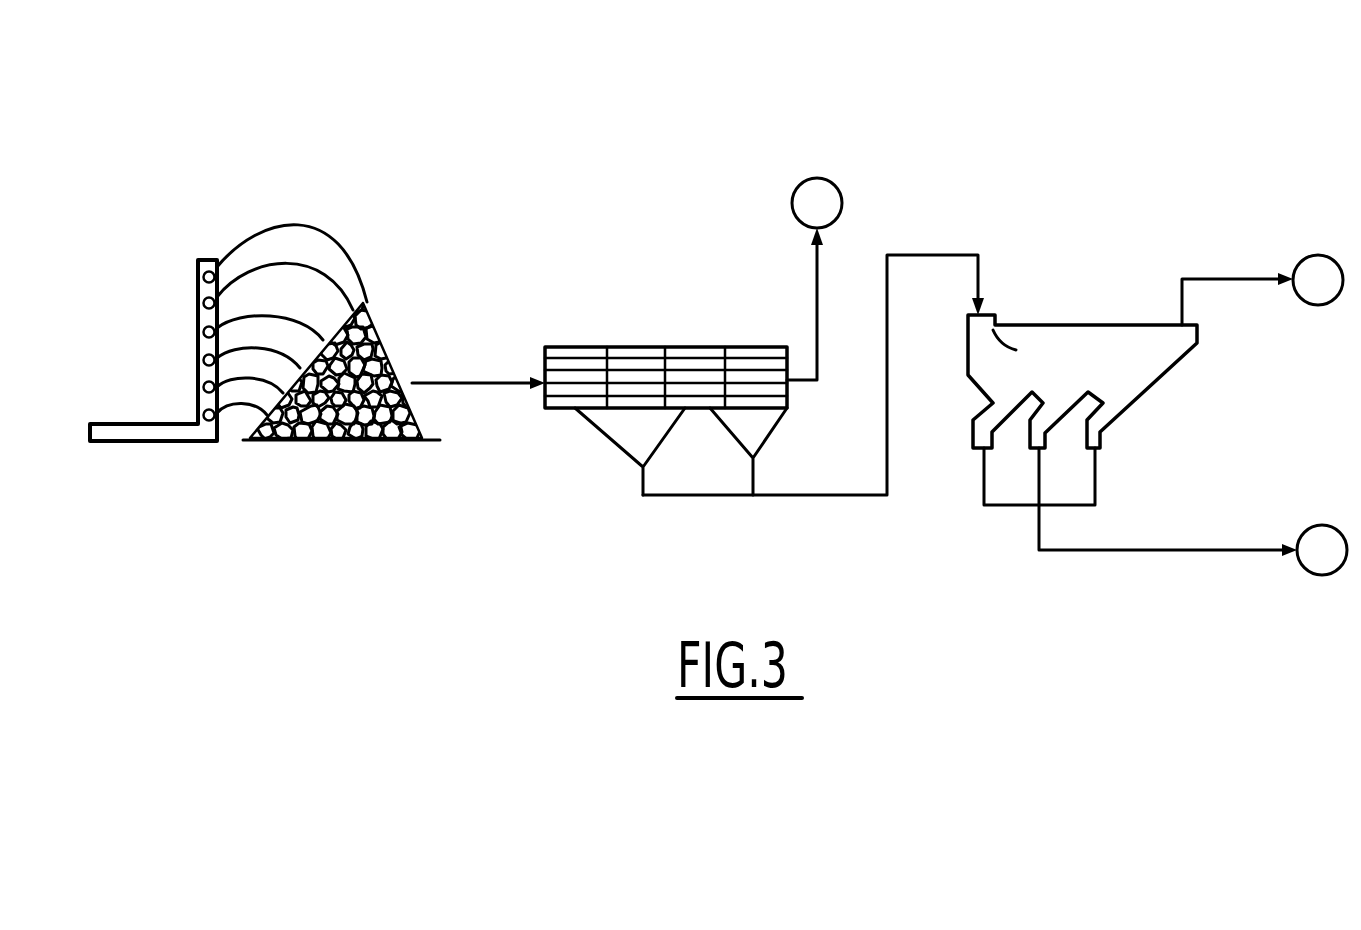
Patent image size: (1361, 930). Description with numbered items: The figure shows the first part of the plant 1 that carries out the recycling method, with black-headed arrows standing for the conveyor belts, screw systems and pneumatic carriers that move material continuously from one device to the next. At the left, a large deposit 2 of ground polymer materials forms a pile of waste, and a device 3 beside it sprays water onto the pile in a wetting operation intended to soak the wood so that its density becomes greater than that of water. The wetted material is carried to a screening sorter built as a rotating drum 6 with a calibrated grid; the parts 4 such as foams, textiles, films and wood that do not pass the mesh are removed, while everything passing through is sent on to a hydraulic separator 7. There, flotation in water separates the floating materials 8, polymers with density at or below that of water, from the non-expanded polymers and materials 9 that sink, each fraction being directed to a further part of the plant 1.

The plant 1 is at (699, 118).
The deposit of polymer materials 2 is at (380, 318).
The spraying device 3 is at (206, 262).
The removed parts 4 is at (817, 203).
The rotating drum 6 is at (643, 347).
The hydraulic separator 7 is at (1097, 325).
The floating materials 8 is at (1318, 280).
The non-expanded polymers and materials 9 is at (1322, 550).